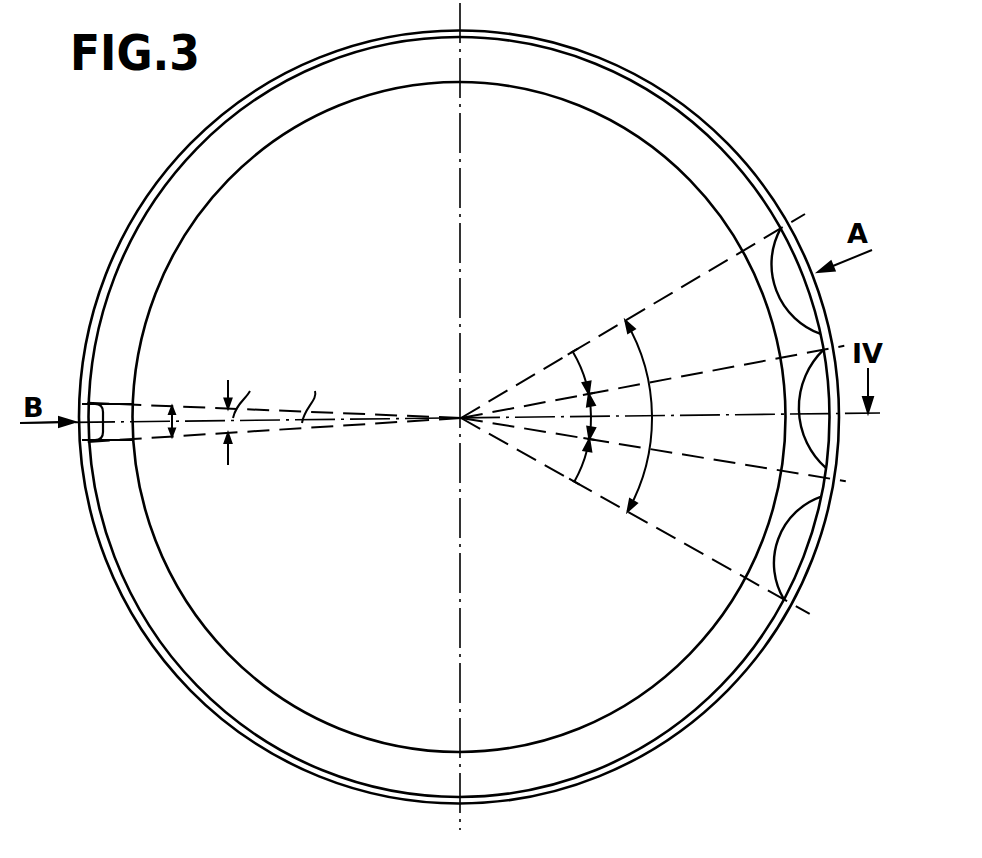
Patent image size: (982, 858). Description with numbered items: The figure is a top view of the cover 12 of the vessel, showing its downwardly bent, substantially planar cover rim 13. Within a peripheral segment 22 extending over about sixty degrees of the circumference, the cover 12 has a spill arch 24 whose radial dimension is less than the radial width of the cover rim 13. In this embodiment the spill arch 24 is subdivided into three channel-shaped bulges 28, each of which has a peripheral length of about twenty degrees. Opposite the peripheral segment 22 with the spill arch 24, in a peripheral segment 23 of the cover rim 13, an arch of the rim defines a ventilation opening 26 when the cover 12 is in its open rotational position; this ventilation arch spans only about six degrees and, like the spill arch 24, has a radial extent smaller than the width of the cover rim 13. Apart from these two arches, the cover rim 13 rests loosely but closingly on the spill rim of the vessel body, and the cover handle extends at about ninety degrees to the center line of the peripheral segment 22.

The cover 12 is at (728, 758).
The cover rim 13 is at (634, 752).
The peripheral segment 22 is at (646, 359).
The peripheral segment 23 is at (184, 414).
The spill arch 24 is at (847, 507).
The ventilation opening 26 is at (97, 428).
The channel-shaped bulges 28 is at (795, 299).